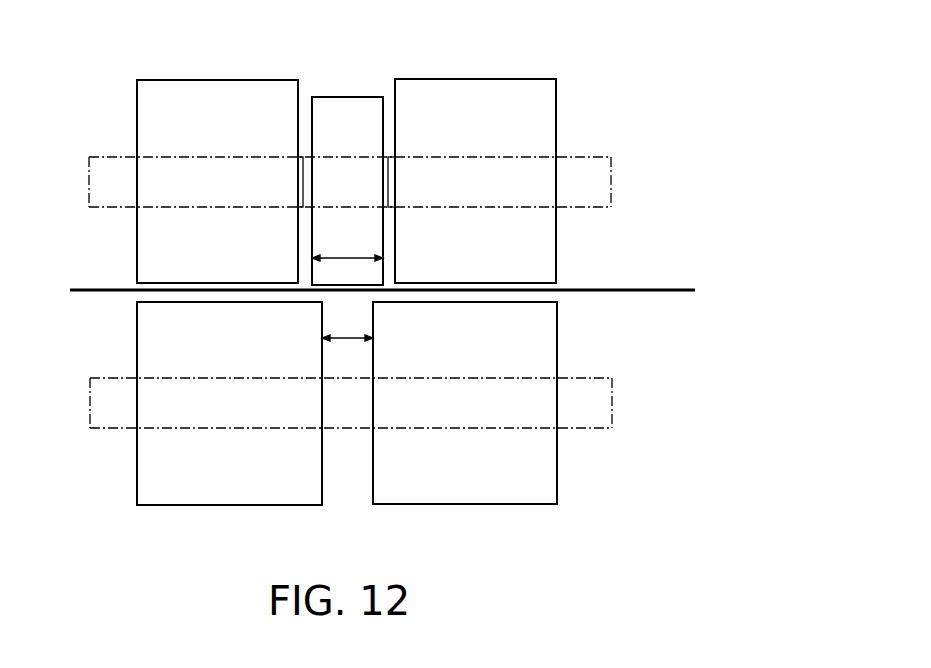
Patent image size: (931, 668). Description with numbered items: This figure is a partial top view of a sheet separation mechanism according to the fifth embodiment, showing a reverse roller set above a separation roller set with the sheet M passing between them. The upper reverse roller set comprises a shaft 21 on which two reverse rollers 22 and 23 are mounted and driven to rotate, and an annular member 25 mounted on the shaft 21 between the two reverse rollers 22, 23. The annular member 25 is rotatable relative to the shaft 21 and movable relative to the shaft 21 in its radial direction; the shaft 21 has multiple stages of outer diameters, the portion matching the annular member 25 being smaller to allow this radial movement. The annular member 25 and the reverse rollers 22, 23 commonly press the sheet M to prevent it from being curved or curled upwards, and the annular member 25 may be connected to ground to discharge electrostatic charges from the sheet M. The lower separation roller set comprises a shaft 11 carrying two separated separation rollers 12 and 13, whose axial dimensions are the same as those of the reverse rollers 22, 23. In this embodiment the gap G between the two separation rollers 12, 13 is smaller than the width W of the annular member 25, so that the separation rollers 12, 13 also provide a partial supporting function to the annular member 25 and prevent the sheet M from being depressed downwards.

The shaft 11 is at (90, 418).
The separation roller 12 is at (557, 342).
The separation roller 13 is at (137, 348).
The shaft 21 is at (100, 156).
The reverse roller 22 is at (556, 260).
The reverse roller 23 is at (137, 253).
The annular member 25 is at (355, 97).
The sheet M is at (645, 289).
The width of the annular member W is at (347, 245).
The gap G is at (347, 323).